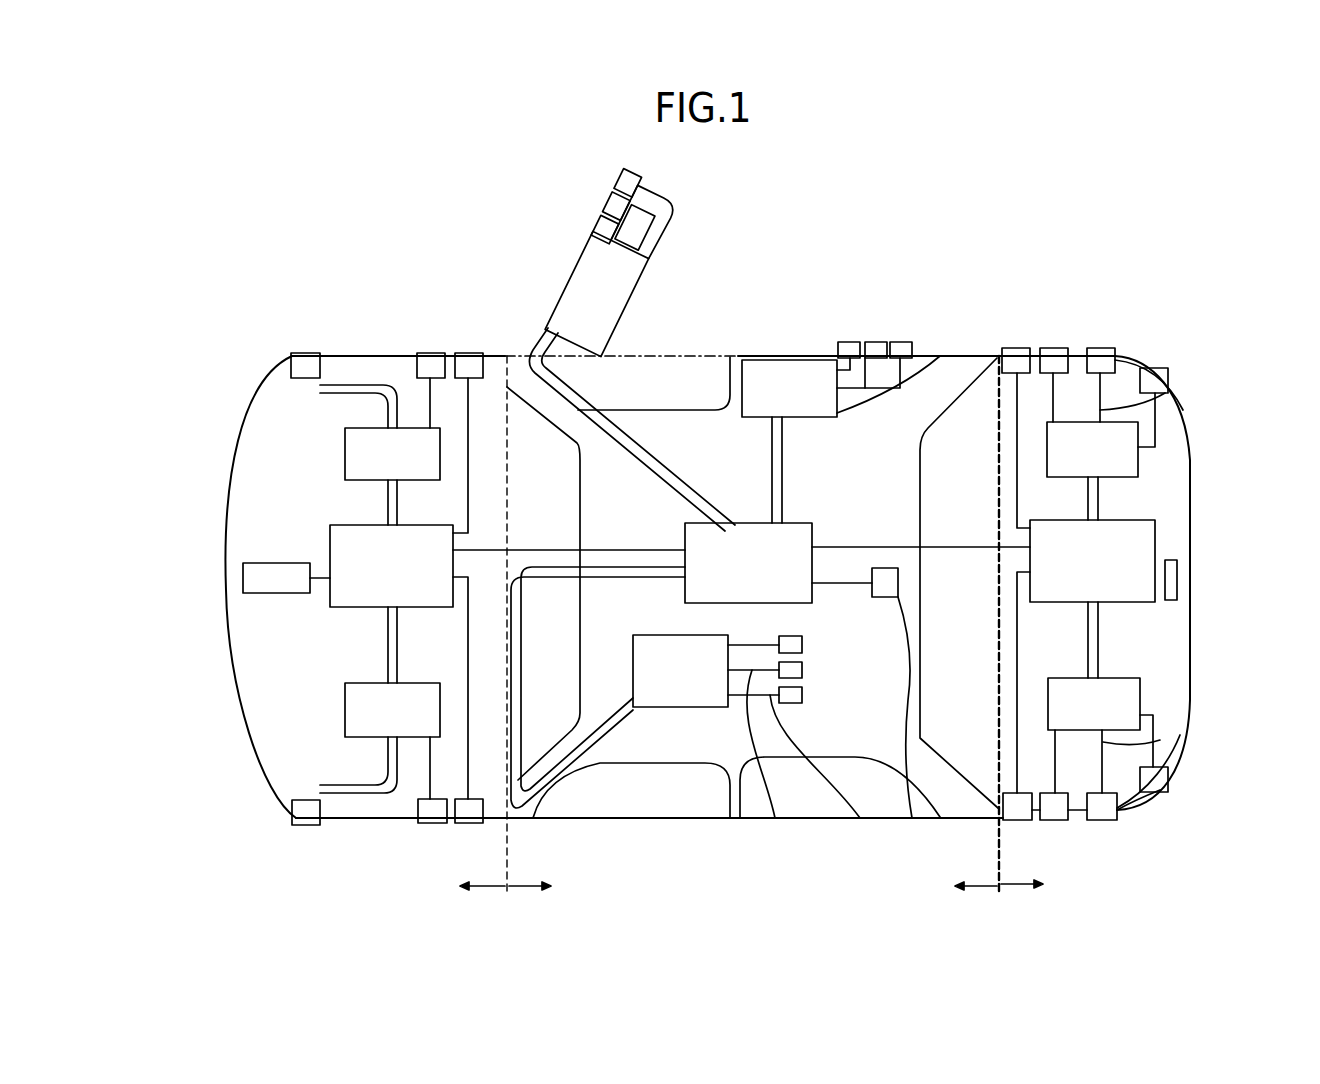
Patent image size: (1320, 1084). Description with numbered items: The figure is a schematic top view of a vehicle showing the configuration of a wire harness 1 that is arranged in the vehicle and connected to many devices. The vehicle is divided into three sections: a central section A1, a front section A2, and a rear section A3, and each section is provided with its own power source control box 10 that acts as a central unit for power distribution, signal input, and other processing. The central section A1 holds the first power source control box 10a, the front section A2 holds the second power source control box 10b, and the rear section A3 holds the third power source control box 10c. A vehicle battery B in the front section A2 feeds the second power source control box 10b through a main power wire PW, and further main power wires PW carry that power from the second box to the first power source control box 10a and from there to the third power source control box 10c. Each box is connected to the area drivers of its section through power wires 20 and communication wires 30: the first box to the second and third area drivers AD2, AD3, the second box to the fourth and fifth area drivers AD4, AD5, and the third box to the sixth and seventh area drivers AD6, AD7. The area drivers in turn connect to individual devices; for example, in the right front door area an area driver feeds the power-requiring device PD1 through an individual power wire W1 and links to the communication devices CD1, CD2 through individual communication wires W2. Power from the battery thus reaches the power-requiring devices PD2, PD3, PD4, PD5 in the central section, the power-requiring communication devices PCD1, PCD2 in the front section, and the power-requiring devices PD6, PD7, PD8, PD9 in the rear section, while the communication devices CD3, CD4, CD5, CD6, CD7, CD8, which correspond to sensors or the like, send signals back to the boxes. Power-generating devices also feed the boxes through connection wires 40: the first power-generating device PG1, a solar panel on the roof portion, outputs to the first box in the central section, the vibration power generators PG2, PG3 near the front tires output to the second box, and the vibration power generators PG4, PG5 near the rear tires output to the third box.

The wire harness 1 is at (876, 233).
The power source control box 10 is at (698, 547).
The first power source control box 10a is at (812, 522).
The second power source control box 10b is at (330, 540).
The third power source control box 10c is at (1140, 522).
The power wire 20 is at (388, 500).
The communication wire 30 is at (397, 522).
The connection wire 40 is at (510, 484).
The main power wire PW is at (322, 582).
The vehicle battery B is at (245, 592).
The individual power wire W1 is at (395, 352).
The individual communication wire W2 is at (302, 378).
The second area driver AD2 is at (790, 358).
The third area driver AD3 is at (682, 708).
The fourth area driver AD4 is at (345, 455).
The fifth area driver AD5 is at (345, 702).
The sixth area driver AD6 is at (1138, 462).
The seventh area driver AD7 is at (1140, 688).
The power-requiring communication device PCD1 is at (305, 352).
The power-requiring communication device PCD2 is at (300, 826).
The communication device CD1 is at (597, 204).
The communication device CD2 is at (641, 183).
The communication device CD3 is at (876, 342).
The communication device CD4 is at (803, 670).
The communication device CD5 is at (432, 352).
The communication device CD6 is at (432, 824).
The communication device CD7 is at (1105, 347).
The communication device CD8 is at (1115, 821).
The power-requiring device PD1 is at (592, 230).
The power-requiring device PD2 is at (848, 342).
The power-requiring device PD3 is at (901, 342).
The power-requiring device PD4 is at (803, 645).
The power-requiring device PD5 is at (803, 695).
The power-requiring device PD6 is at (1053, 347).
The power-requiring device PD7 is at (1160, 367).
The power-requiring device PD8 is at (1060, 821).
The power-requiring device PD9 is at (1169, 785).
The first power-generating device PG1 is at (913, 822).
The second power-generating device PG2 is at (476, 352).
The third power-generating device PG3 is at (505, 826).
The fourth power-generating device PG4 is at (1016, 347).
The fifth power-generating device PG5 is at (1020, 821).
The central section A1 is at (753, 887).
The front section A2 is at (470, 887).
The rear section A3 is at (1036, 884).